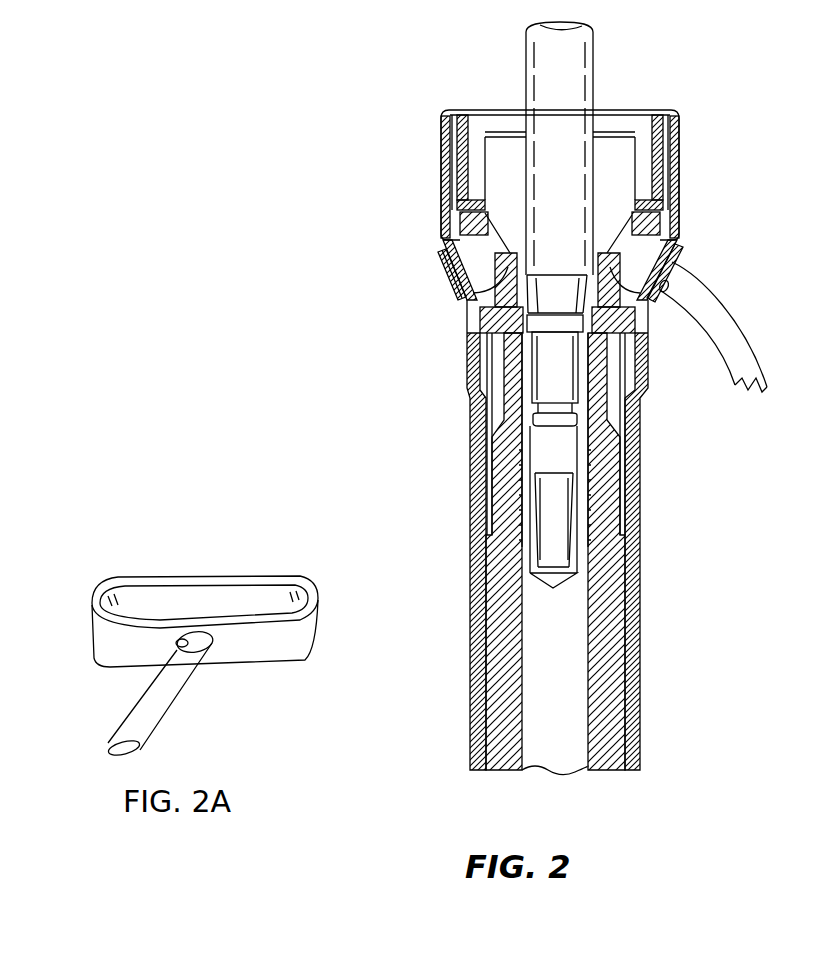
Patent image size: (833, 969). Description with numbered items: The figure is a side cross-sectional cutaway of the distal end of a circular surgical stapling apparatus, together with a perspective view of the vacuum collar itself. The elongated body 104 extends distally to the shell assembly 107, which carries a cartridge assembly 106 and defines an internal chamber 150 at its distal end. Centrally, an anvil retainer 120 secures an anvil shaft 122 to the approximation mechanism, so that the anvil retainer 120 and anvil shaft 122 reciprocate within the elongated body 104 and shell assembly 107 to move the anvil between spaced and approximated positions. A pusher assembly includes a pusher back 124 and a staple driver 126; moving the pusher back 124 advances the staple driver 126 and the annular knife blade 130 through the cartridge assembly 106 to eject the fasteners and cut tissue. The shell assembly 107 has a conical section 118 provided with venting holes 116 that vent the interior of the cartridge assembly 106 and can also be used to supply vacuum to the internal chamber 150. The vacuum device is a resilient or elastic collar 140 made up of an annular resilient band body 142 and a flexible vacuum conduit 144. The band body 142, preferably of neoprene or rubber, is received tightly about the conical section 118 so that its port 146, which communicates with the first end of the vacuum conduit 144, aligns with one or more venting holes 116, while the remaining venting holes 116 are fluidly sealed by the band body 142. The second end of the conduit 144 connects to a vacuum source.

In FIG. 2, the elongated body 104 is at (640, 468).
In FIG. 2, the cartridge assembly 106 is at (678, 122).
In FIG. 2, the shell assembly 107 is at (431, 184).
In FIG. 2, the venting holes 116 is at (670, 262).
In FIG. 2, the conical section 118 is at (447, 240).
In FIG. 2, the anvil retainer 120 is at (577, 520).
In FIG. 2, the anvil shaft 122 is at (678, 178).
In FIG. 2, the pusher back 124 is at (617, 620).
In FIG. 2, the staple driver 126 is at (673, 193).
In FIG. 2, the annular knife blade 130 is at (678, 145).
In FIG. 2, the resilient collar 140 is at (443, 260).
In FIG. 2A, the resilient collar 140 is at (187, 568).
In FIG. 2, the annular resilient band body 142 is at (447, 277).
In FIG. 2A, the annular resilient band body 142 is at (250, 592).
In FIG. 2, the flexible vacuum conduit 144 is at (730, 308).
In FIG. 2A, the flexible vacuum conduit 144 is at (173, 717).
In FIG. 2, the port 146 is at (665, 290).
In FIG. 2A, the port 146 is at (176, 652).
In FIG. 2, the internal chamber 150 is at (513, 185).